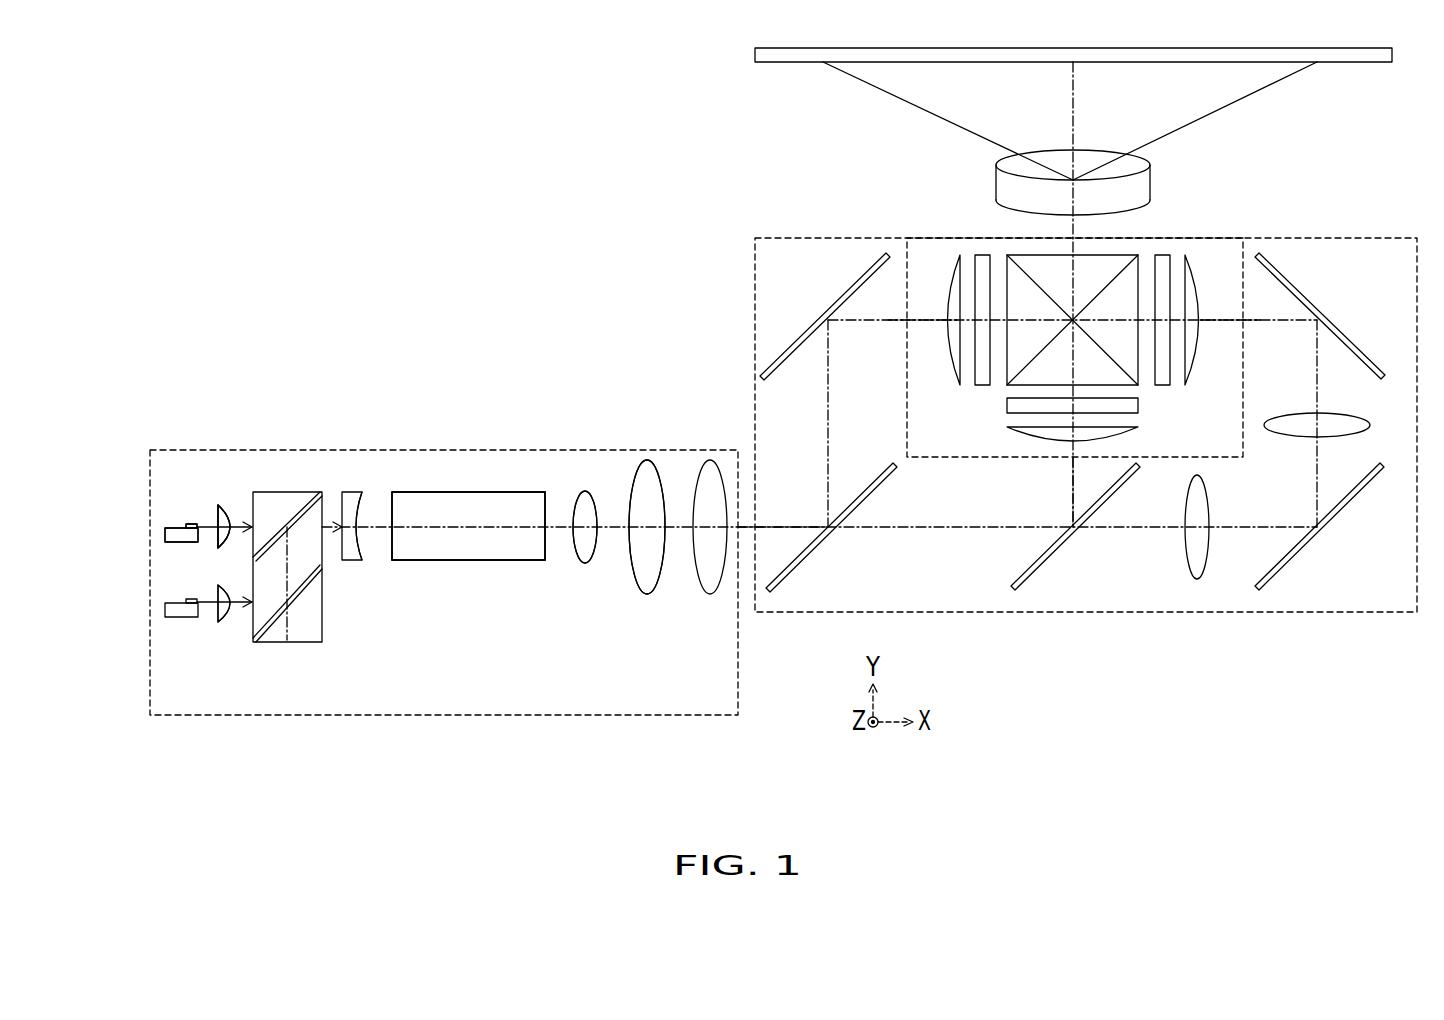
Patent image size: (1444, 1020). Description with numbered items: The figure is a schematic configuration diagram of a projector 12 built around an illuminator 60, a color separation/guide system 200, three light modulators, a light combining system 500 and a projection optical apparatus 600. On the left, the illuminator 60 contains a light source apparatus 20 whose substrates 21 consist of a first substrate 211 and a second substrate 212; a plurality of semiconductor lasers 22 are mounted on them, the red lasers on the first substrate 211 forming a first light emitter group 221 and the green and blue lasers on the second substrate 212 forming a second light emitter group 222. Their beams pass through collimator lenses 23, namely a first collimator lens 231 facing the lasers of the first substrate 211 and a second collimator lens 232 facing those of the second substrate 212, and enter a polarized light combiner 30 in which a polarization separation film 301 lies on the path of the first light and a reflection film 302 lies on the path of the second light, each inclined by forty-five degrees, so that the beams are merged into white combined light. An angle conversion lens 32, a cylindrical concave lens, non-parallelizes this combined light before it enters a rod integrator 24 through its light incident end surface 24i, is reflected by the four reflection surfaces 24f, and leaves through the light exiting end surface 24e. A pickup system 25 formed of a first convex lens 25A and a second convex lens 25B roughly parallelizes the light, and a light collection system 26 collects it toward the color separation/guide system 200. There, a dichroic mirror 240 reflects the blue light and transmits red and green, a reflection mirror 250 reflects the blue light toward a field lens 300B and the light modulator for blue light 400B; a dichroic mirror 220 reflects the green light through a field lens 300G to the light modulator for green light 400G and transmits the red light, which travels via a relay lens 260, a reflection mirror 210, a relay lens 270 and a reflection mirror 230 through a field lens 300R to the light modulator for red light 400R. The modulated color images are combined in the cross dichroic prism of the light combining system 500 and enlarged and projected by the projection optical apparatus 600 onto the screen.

The projector 12 is at (793, 183).
The light source apparatus 20 is at (161, 400).
The substrates 21 is at (175, 527).
The first substrate 211 is at (165, 532).
The second substrate 212 is at (165, 612).
The semiconductor lasers 22 is at (191, 523).
The first light emitter group 221 is at (211, 453).
The second light emitter group 222 is at (188, 601).
The collimator lenses 23 is at (251, 448).
The first collimator lens 231 is at (222, 506).
The second collimator lens 232 is at (226, 622).
The polarized light combiner 30 is at (286, 480).
The polarization separation film 301 is at (285, 535).
The reflection film 302 is at (283, 620).
The angle conversion lens 32 is at (345, 500).
The rod integrator 24 is at (497, 492).
The light incident end surface 24i is at (392, 560).
The light exiting end surface 24e is at (548, 560).
The reflection surfaces 24f is at (443, 492).
The illuminator 60 is at (525, 450).
The pickup system 25 is at (665, 400).
The first convex lens 25A is at (585, 493).
The second convex lens 25B is at (647, 462).
The light collection system 26 is at (710, 462).
The color separation/guide system 200 is at (1380, 237).
The reflection mirror 210 is at (1308, 545).
The dichroic mirror 220 is at (1063, 545).
The reflection mirror 230 is at (1383, 368).
The dichroic mirror 240 is at (820, 545).
The reflection mirror 250 is at (780, 355).
The relay lens 260 is at (1190, 568).
The relay lens 270 is at (1330, 415).
The field lens 300B is at (950, 256).
The field lens 300G is at (1138, 432).
The field lens 300R is at (1188, 256).
The light modulator for blue light 400B is at (957, 256).
The light modulator for green light 400G is at (1138, 405).
The light modulator for red light 400R is at (1160, 256).
The light combining system 500 is at (1005, 256).
The projection optical apparatus 600 is at (1152, 180).